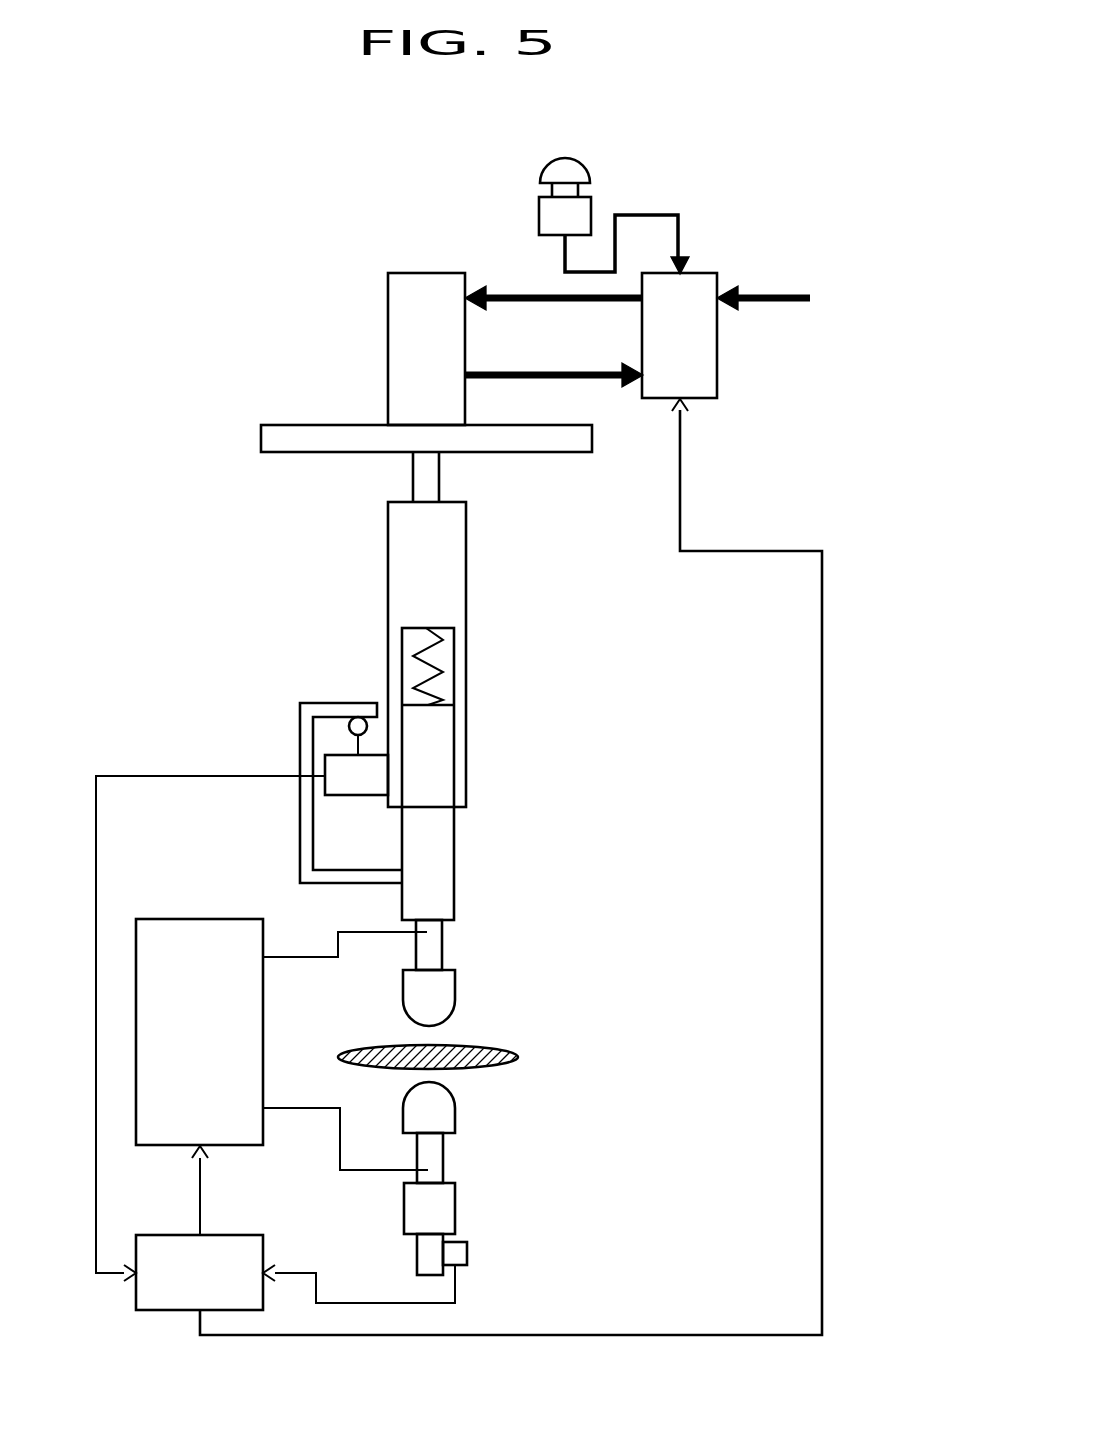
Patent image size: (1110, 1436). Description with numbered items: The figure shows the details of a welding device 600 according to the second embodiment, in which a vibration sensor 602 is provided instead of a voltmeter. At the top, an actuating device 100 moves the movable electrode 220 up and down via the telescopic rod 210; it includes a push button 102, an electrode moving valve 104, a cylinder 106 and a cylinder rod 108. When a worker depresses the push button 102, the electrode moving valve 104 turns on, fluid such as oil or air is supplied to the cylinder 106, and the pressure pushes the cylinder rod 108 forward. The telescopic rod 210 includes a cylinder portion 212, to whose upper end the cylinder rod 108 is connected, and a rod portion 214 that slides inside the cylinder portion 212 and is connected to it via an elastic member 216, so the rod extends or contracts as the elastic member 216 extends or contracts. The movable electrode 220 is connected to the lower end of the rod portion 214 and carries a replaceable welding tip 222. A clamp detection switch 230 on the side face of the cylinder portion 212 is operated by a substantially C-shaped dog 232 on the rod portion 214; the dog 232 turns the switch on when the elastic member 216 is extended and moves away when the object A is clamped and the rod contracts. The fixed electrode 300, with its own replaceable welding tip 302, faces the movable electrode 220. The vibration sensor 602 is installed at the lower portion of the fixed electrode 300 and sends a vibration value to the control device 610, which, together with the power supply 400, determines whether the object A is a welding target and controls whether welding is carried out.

The welding device 600 is at (186, 190).
The actuating device 100 is at (427, 242).
The push button 102 is at (566, 158).
The electrode moving valve 104 is at (716, 273).
The cylinder 106 is at (400, 327).
The cylinder rod 108 is at (427, 480).
The telescopic rod 210 is at (600, 671).
The cylinder portion 212 is at (445, 543).
The rod portion 214 is at (433, 850).
The elastic member 216 is at (435, 667).
The movable electrode 220 is at (459, 939).
The welding tip 222 is at (438, 997).
The clamp detection switch 230 is at (337, 751).
The dog 232 is at (338, 702).
The fixed electrode 300 is at (459, 1169).
The welding tip 302 is at (438, 1110).
The power supply 400 is at (203, 919).
The vibration sensor 602 is at (468, 1252).
The control device 610 is at (152, 1235).
The object A is at (518, 1053).